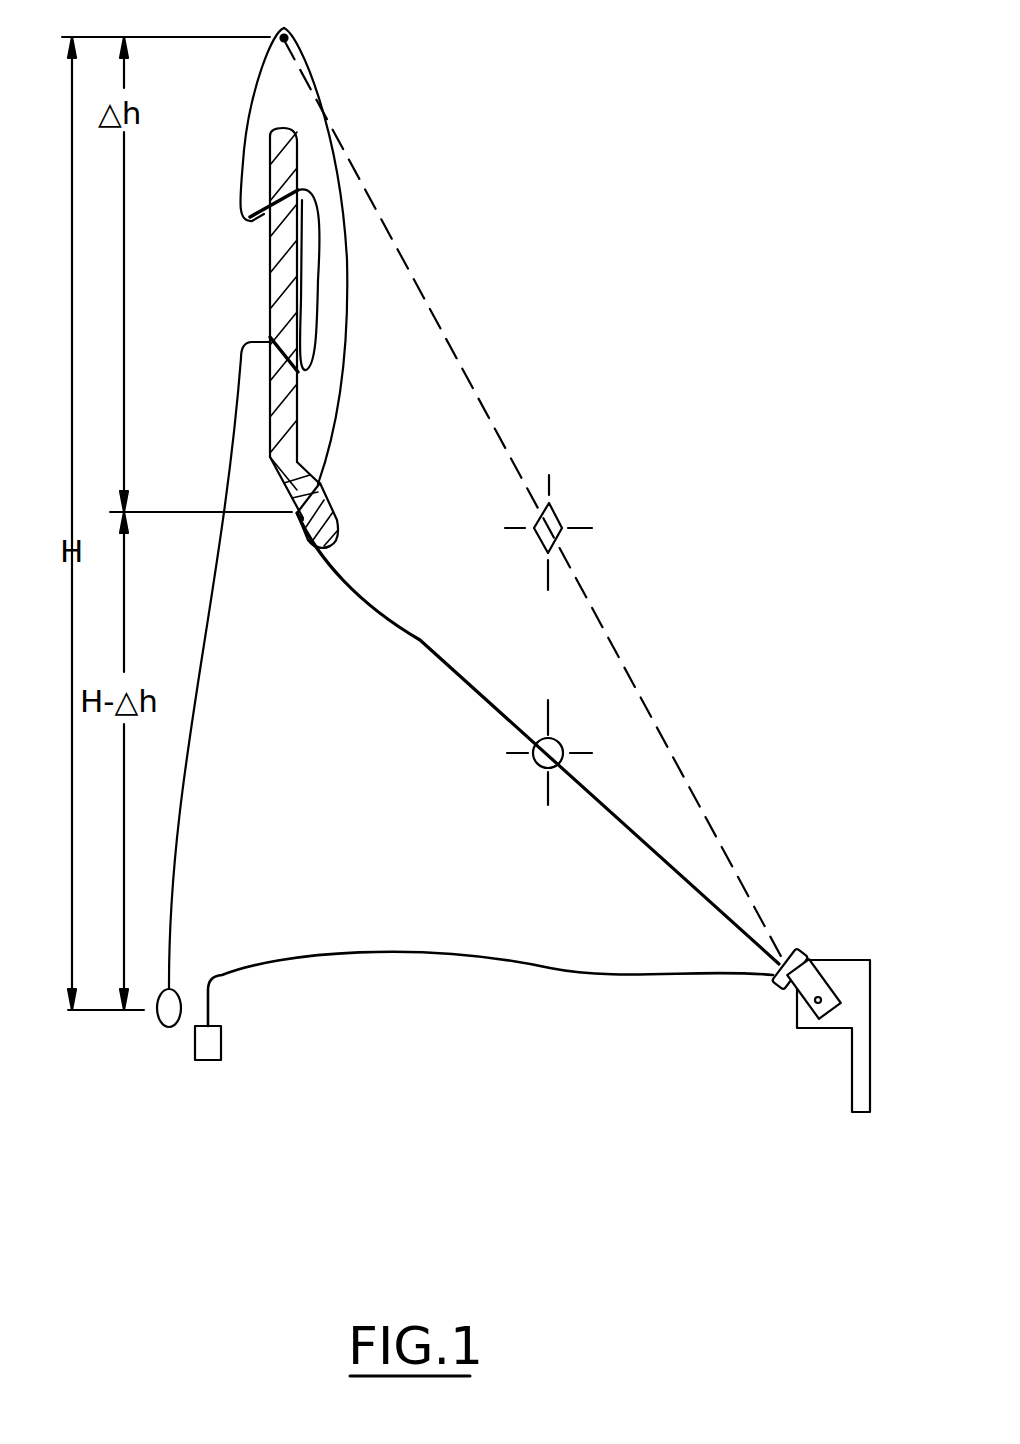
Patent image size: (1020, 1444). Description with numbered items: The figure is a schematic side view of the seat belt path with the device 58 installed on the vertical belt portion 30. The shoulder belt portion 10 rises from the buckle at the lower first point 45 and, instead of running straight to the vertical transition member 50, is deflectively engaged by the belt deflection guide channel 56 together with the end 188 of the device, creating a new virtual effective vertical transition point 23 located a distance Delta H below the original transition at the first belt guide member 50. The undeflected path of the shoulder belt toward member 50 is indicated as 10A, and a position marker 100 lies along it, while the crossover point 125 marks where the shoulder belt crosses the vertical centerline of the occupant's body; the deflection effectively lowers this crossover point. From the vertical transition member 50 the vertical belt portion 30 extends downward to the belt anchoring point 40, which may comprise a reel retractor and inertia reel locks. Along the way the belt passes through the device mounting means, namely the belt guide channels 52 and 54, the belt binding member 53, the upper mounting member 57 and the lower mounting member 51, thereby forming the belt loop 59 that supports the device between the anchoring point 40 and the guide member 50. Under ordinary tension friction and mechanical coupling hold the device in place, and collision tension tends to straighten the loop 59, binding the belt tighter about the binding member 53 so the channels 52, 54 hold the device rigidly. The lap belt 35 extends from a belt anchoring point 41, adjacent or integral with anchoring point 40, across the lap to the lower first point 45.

The shoulder belt portion 10 is at (460, 670).
The tow line at raised position 10A is at (533, 500).
The virtual effective vertical transition point 23 is at (297, 521).
The vertical belt portion 30 is at (252, 106).
The lap belt 35 is at (600, 985).
The belt anchoring point 40 is at (163, 1026).
The belt anchoring point 41 is at (221, 1048).
The lower first point 45 is at (805, 950).
The vertical transition member 50 is at (290, 38).
The lower mounting member 51 is at (294, 430).
The belt guide channel 52 is at (262, 224).
The belt binding member 53 is at (268, 285).
The belt guide channel 54 is at (300, 380).
The belt deflection guide channel 56 is at (314, 483).
The upper mounting member 57 is at (300, 142).
The device 58 is at (330, 517).
The belt loop 59 is at (316, 304).
The first position marker 100 is at (555, 540).
The crossover point 125 is at (532, 768).
The end 188 is at (333, 542).